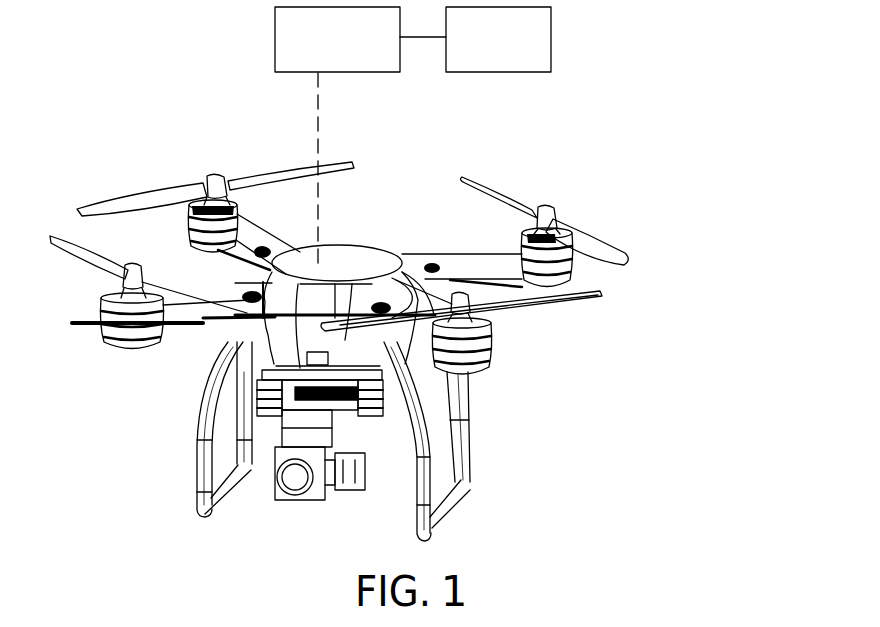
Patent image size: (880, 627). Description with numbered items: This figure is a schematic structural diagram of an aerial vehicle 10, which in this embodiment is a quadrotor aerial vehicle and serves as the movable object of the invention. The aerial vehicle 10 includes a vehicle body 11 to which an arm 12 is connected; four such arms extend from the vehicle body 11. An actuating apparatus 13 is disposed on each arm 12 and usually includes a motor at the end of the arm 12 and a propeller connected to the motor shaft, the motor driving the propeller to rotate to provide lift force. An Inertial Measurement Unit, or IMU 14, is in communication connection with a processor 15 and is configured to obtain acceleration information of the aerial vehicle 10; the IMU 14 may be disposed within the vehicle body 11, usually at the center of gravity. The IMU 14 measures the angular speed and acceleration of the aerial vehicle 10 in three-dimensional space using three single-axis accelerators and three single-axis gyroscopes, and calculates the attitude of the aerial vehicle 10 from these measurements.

The aerial vehicle 10 is at (646, 222).
The vehicle body 11 is at (358, 246).
The arm 12 is at (198, 333).
The actuating apparatus 13 is at (492, 352).
The Inertial Measurement Unit (IMU) 14 is at (555, 37).
The processor 15 is at (272, 32).